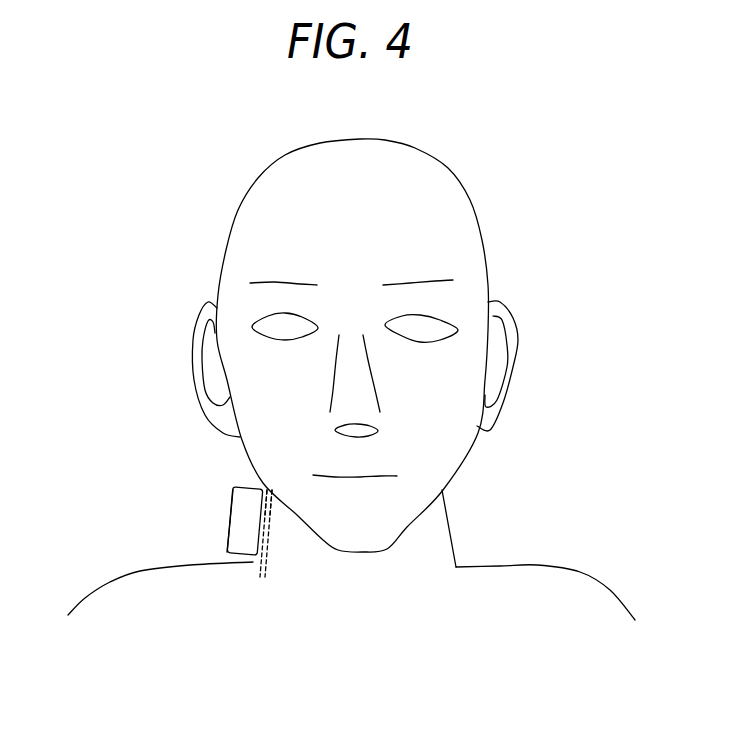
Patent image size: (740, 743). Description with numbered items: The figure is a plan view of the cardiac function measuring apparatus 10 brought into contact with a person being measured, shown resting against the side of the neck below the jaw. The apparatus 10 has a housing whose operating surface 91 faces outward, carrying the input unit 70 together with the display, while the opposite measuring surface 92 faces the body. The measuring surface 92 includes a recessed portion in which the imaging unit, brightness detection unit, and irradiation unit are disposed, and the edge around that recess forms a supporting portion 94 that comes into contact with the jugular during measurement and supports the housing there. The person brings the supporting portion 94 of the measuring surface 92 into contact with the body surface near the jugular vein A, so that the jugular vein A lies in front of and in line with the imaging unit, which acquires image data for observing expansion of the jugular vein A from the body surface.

The cardiac function measuring apparatus 10 is at (233, 494).
The operating surface 91 is at (232, 512).
The input unit 70 is at (227, 542).
The measuring surface 92 is at (263, 540).
The supporting portion 94 is at (267, 507).
The jugular vein A is at (257, 560).